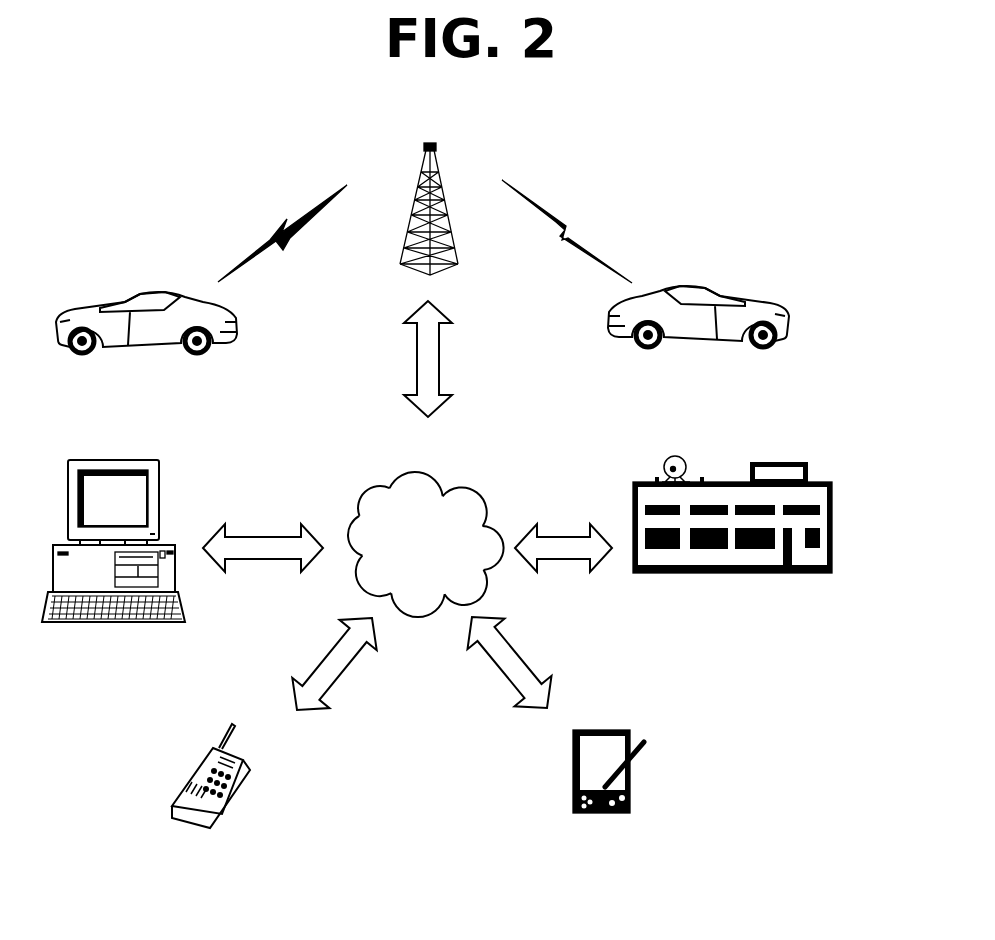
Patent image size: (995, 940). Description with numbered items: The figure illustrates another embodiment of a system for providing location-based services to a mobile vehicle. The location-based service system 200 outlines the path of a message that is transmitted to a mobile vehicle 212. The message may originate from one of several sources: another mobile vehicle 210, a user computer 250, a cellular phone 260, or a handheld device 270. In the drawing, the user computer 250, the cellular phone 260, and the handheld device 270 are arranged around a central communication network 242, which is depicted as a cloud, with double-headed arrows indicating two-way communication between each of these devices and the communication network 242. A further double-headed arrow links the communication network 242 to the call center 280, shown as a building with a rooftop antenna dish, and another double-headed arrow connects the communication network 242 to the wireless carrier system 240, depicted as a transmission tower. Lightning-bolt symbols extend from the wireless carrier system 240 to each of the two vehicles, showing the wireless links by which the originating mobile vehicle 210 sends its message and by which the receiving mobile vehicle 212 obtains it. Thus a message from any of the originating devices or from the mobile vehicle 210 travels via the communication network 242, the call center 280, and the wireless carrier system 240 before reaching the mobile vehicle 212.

The location-based service system 200 is at (174, 57).
The mobile vehicle 210 is at (110, 298).
The mobile vehicle 212 is at (707, 290).
The wireless carrier system 240 is at (433, 150).
The communication network 242 is at (426, 544).
The user computer 250 is at (133, 458).
The cellular phone 260 is at (253, 770).
The handheld device 270 is at (600, 730).
The call center 280 is at (760, 462).